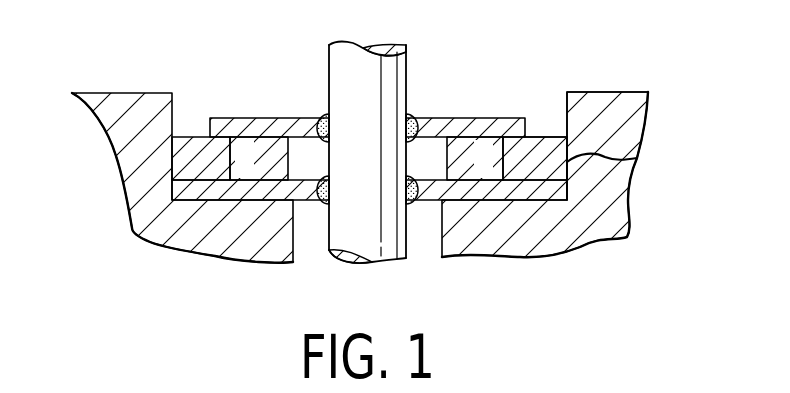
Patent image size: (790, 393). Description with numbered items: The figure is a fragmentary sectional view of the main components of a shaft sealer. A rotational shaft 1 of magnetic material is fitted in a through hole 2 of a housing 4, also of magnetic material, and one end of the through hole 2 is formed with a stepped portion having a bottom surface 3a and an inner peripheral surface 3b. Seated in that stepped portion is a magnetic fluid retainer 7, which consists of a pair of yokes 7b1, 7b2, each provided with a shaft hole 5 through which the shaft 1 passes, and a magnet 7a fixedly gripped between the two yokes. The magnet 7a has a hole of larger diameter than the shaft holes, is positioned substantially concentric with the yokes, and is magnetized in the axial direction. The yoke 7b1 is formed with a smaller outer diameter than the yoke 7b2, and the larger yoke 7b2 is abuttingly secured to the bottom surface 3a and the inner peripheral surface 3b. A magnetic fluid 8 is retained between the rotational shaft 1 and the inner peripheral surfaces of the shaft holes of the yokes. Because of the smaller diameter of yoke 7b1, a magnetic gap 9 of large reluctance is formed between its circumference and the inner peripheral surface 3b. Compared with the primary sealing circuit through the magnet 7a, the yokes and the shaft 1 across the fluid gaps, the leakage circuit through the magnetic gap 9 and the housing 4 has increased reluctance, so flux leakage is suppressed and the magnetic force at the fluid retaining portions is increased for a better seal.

The rotational shaft 1 is at (404, 69).
The through hole 2 is at (313, 222).
The bottom surface 3a is at (502, 200).
The inner peripheral surface 3b is at (637, 158).
The housing 4 is at (597, 110).
The shaft hole 5 is at (418, 206).
The magnetic fluid retainer 7 is at (276, 100).
The magnet 7a is at (195, 157).
The yoke 7b1 is at (233, 118).
The yoke 7b2 is at (186, 178).
The magnetic fluid 8 is at (323, 114).
The magnetic gap 9 is at (549, 131).